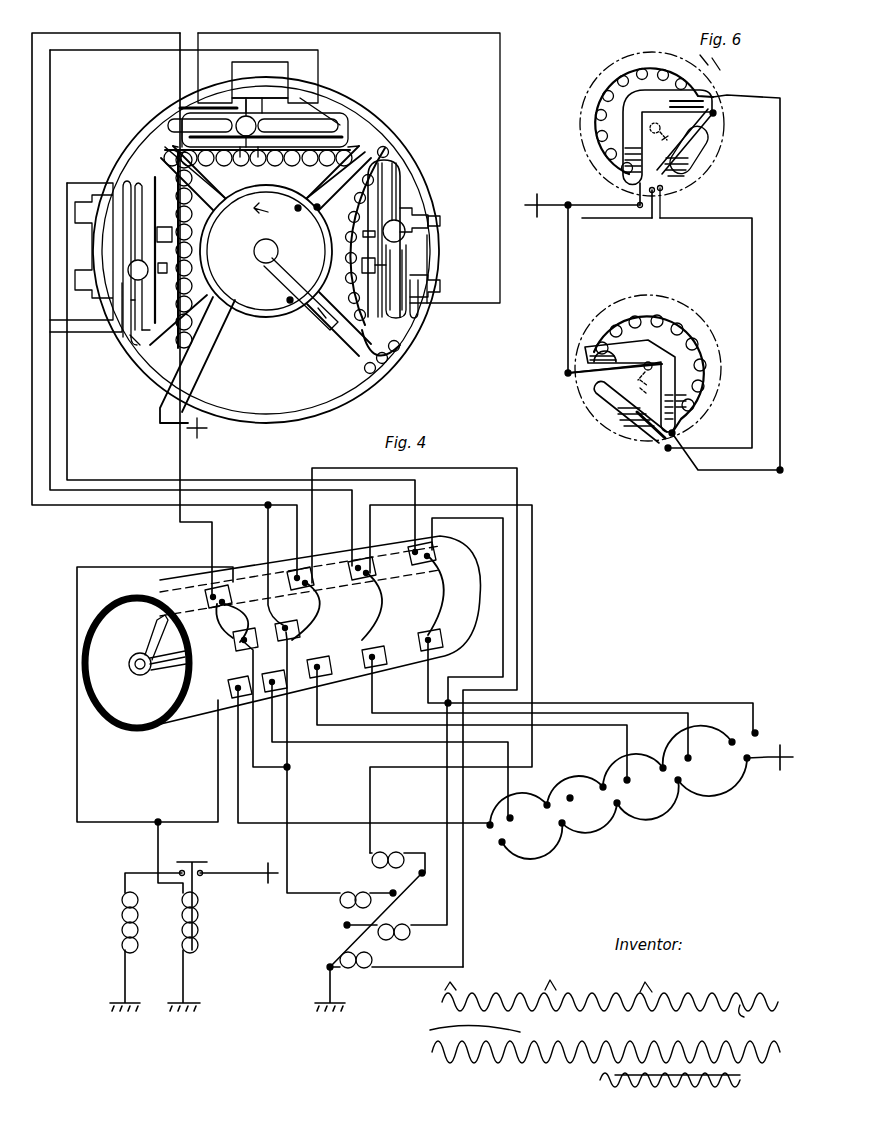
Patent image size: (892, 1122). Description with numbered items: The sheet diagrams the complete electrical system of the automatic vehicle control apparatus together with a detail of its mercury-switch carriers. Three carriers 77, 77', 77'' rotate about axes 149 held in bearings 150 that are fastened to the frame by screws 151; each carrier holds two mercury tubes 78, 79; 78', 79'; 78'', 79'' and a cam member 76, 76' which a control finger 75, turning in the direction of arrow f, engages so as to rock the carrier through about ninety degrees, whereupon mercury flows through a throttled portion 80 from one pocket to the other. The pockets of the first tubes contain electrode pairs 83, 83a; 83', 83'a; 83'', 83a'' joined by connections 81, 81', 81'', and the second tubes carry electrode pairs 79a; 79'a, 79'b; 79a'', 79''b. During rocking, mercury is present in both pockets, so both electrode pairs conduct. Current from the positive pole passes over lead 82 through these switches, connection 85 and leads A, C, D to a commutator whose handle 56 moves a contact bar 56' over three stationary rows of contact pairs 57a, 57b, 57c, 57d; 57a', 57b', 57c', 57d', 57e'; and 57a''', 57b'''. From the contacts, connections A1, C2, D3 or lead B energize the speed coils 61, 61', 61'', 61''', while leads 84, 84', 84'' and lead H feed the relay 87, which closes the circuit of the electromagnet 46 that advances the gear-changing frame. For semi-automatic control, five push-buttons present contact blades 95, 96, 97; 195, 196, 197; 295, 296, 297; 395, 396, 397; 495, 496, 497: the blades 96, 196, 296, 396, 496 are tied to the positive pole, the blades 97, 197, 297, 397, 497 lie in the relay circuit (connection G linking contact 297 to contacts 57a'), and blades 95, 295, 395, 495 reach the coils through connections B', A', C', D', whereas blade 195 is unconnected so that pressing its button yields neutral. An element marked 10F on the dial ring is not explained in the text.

In FIG. 4, the control finger 75 is at (280, 274).
In FIG. 4, the arrow f is at (263, 217).
In FIG. 4, the lead 82 is at (202, 372).
In FIG. 4, the lead 84 is at (293, 334).
In FIG. 6, the lead 84 is at (726, 461).
In FIG. 4, the bearings 150 is at (283, 85).
In FIG. 4, the screws 151 is at (233, 60).
In FIG. 4, the electrodes 83' is at (243, 113).
In FIG. 6, the electrodes 83' is at (606, 186).
In FIG. 4, the mercury tube 79' is at (275, 102).
In FIG. 6, the mercury tube 79' is at (701, 143).
In FIG. 4, the electrodes 79'a is at (280, 99).
In FIG. 6, the electrodes 79'a is at (745, 282).
In FIG. 4, the mercury tube 78' is at (252, 115).
In FIG. 6, the mercury tube 78' is at (637, 129).
In FIG. 4, the electrodes 79'b is at (200, 110).
In FIG. 6, the electrodes 79'b is at (696, 188).
In FIG. 4, the connection 81' is at (258, 170).
In FIG. 4, the carrier 77' is at (209, 154).
In FIG. 6, the carrier 77' is at (654, 103).
In FIG. 4, the connection 84'' is at (165, 158).
In FIG. 4, the lead 84' is at (366, 156).
In FIG. 4, the electrodes 83'a is at (360, 110).
In FIG. 6, the electrodes 83'a is at (681, 66).
In FIG. 4, the electrodes 83a'' is at (130, 240).
In FIG. 4, the electrodes 79a'' is at (86, 252).
In FIG. 4, the mercury tube 79'' is at (124, 256).
In FIG. 4, the mercury tube 78'' is at (194, 250).
In FIG. 4, the connection 81'' is at (205, 250).
In FIG. 4, the electrodes 83'' is at (189, 310).
In FIG. 4, the electrodes 79''b is at (106, 327).
In FIG. 4, the carrier 77'' is at (128, 365).
In FIG. 4, the carrier 77 is at (405, 227).
In FIG. 6, the carrier 77 is at (644, 359).
In FIG. 4, the electrodes 83 is at (417, 240).
In FIG. 6, the electrodes 83 is at (597, 358).
In FIG. 4, the mercury tube 78 is at (427, 240).
In FIG. 6, the mercury tube 78 is at (617, 320).
In FIG. 4, the axes 149 is at (428, 224).
In FIG. 6, the axes 149 is at (646, 367).
In FIG. 4, the electrodes 83a is at (421, 265).
In FIG. 6, the electrodes 83a is at (706, 407).
In FIG. 4, the electrodes 79a is at (450, 290).
In FIG. 6, the electrodes 79a is at (641, 442).
In FIG. 4, the connection 85 is at (465, 303).
In FIG. 6, the connection 85 is at (752, 305).
In FIG. 4, the mercury tube 79 is at (433, 315).
In FIG. 6, the mercury tube 79 is at (622, 432).
In FIG. 4, the connection 81 is at (356, 236).
In FIG. 6, the connection 81 is at (648, 359).
In FIG. 4, the cam member 76 is at (360, 289).
In FIG. 6, the cam member 76 is at (622, 413).
In FIG. 4, the stator ring 10F is at (308, 420).
In FIG. 4, the connection A is at (154, 305).
In FIG. 6, the connection A is at (638, 322).
In FIG. 4, the connection C is at (201, 308).
In FIG. 4, the connection D is at (241, 367).
In FIG. 4, the connection A1 is at (525, 487).
In FIG. 4, the connection D3 is at (533, 550).
In FIG. 4, the connection C2 is at (535, 597).
In FIG. 4, the movable handle 56 is at (137, 663).
In FIG. 4, the contact bar 56' is at (304, 631).
In FIG. 4, the contacts 57a is at (210, 606).
In FIG. 4, the contacts 57a''' is at (238, 696).
In FIG. 4, the contacts 57a' is at (351, 741).
In FIG. 4, the contacts 57b is at (296, 589).
In FIG. 4, the contacts 57b''' is at (302, 697).
In FIG. 4, the contacts 57b' is at (382, 734).
In FIG. 4, the contacts 57c is at (352, 586).
In FIG. 4, the contacts 57c' is at (462, 708).
In FIG. 4, the contacts 57d is at (441, 610).
In FIG. 4, the contacts 57d' is at (520, 692).
In FIG. 4, the contacts 57e' is at (579, 672).
In FIG. 4, the connection D' is at (448, 661).
In FIG. 4, the connection C' is at (385, 693).
In FIG. 4, the connection A' is at (328, 707).
In FIG. 4, the connection B' is at (332, 755).
In FIG. 4, the lead B is at (298, 803).
In FIG. 4, the connection G is at (332, 823).
In FIG. 4, the lead H is at (77, 745).
In FIG. 4, the electromagnet 46 is at (115, 905).
In FIG. 4, the relay 87 is at (199, 920).
In FIG. 4, the coil 61 is at (389, 942).
In FIG. 4, the coil 61' is at (397, 852).
In FIG. 4, the coil 61'' is at (395, 821).
In FIG. 4, the coil 61''' is at (365, 883).
In FIG. 4, the contact blade 95 is at (512, 818).
In FIG. 4, the contact blade 96 is at (502, 845).
In FIG. 4, the contact blade 97 is at (490, 828).
In FIG. 4, the contact blade 195 is at (572, 799).
In FIG. 4, the contact blade 196 is at (562, 826).
In FIG. 4, the contact blade 197 is at (547, 802).
In FIG. 4, the contact blade 295 is at (629, 780).
In FIG. 4, the contact blade 296 is at (618, 806).
In FIG. 4, the contact blade 297 is at (603, 784).
In FIG. 4, the contact blade 395 is at (690, 758).
In FIG. 4, the contact blade 396 is at (678, 783).
In FIG. 4, the contact blade 397 is at (663, 765).
In FIG. 4, the contact blade 495 is at (757, 733).
In FIG. 4, the contact blade 496 is at (747, 761).
In FIG. 4, the contact blade 497 is at (732, 740).
In FIG. 6, the throttled portion 80 is at (630, 103).
In FIG. 6, the cam member 76' is at (599, 146).